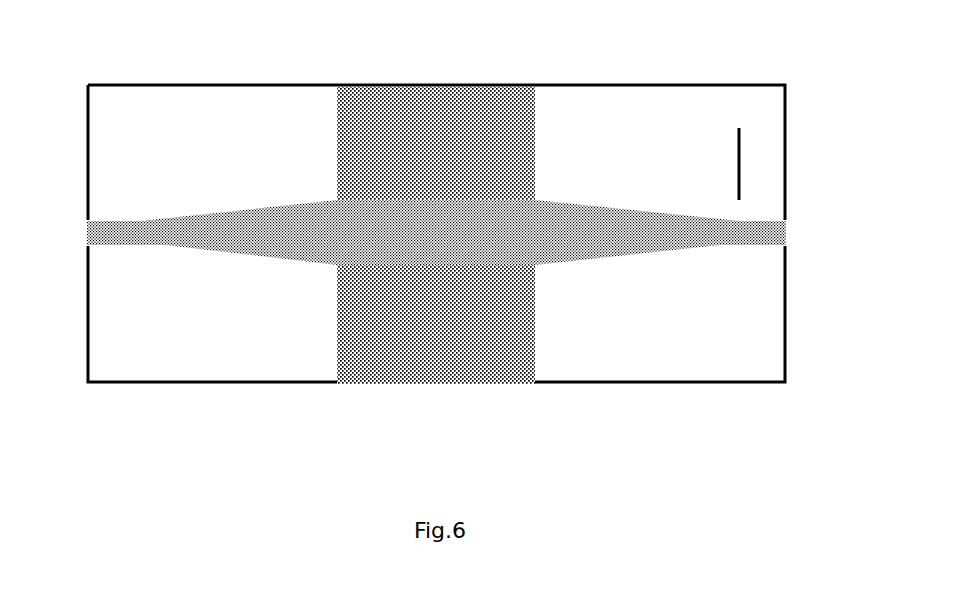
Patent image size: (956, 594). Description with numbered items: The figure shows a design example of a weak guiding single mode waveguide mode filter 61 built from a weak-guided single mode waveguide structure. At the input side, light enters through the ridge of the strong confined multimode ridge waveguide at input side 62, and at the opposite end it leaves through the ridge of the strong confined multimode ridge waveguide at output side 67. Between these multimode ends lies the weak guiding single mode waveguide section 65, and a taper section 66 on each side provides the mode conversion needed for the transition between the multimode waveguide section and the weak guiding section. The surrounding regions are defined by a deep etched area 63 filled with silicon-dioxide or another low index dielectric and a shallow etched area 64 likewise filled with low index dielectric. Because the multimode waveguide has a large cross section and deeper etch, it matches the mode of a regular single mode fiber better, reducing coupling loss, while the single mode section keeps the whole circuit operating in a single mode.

The weak guiding single mode waveguide mode filter 61 is at (88, 403).
The ridge of the strong confined multimode ridge waveguide at input side 62 is at (106, 232).
The deep etched area filled with silicon-dioxide 63 is at (168, 175).
The shallow etched area filled with silicon-dioxide 64 is at (305, 207).
The weak guiding single mode waveguide section 65 is at (533, 62).
The taper section 66 is at (535, 153).
The ridge of the strong confined multimode ridge waveguide at output side 67 is at (762, 232).